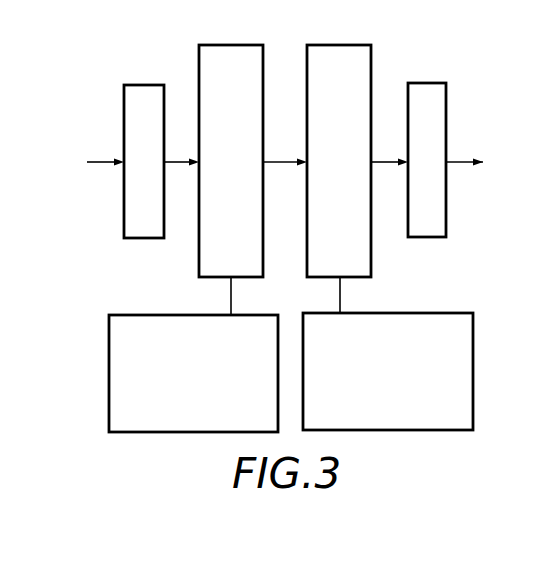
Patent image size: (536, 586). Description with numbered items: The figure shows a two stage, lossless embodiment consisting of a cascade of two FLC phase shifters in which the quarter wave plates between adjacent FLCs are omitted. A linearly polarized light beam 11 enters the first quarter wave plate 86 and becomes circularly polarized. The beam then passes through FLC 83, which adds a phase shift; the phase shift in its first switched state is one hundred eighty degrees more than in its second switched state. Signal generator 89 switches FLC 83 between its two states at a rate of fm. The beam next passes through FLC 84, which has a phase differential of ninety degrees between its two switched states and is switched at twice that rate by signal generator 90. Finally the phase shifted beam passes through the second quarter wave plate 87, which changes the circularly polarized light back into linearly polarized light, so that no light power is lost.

The linearly polarized light beam 11 is at (105, 162).
The FLC 83 is at (246, 117).
The FLC 84 is at (353, 117).
The quarter wave plate 86 is at (152, 238).
The quarter wave plate 87 is at (418, 237).
The signal generator 89 is at (109, 368).
The signal generator 90 is at (473, 360).